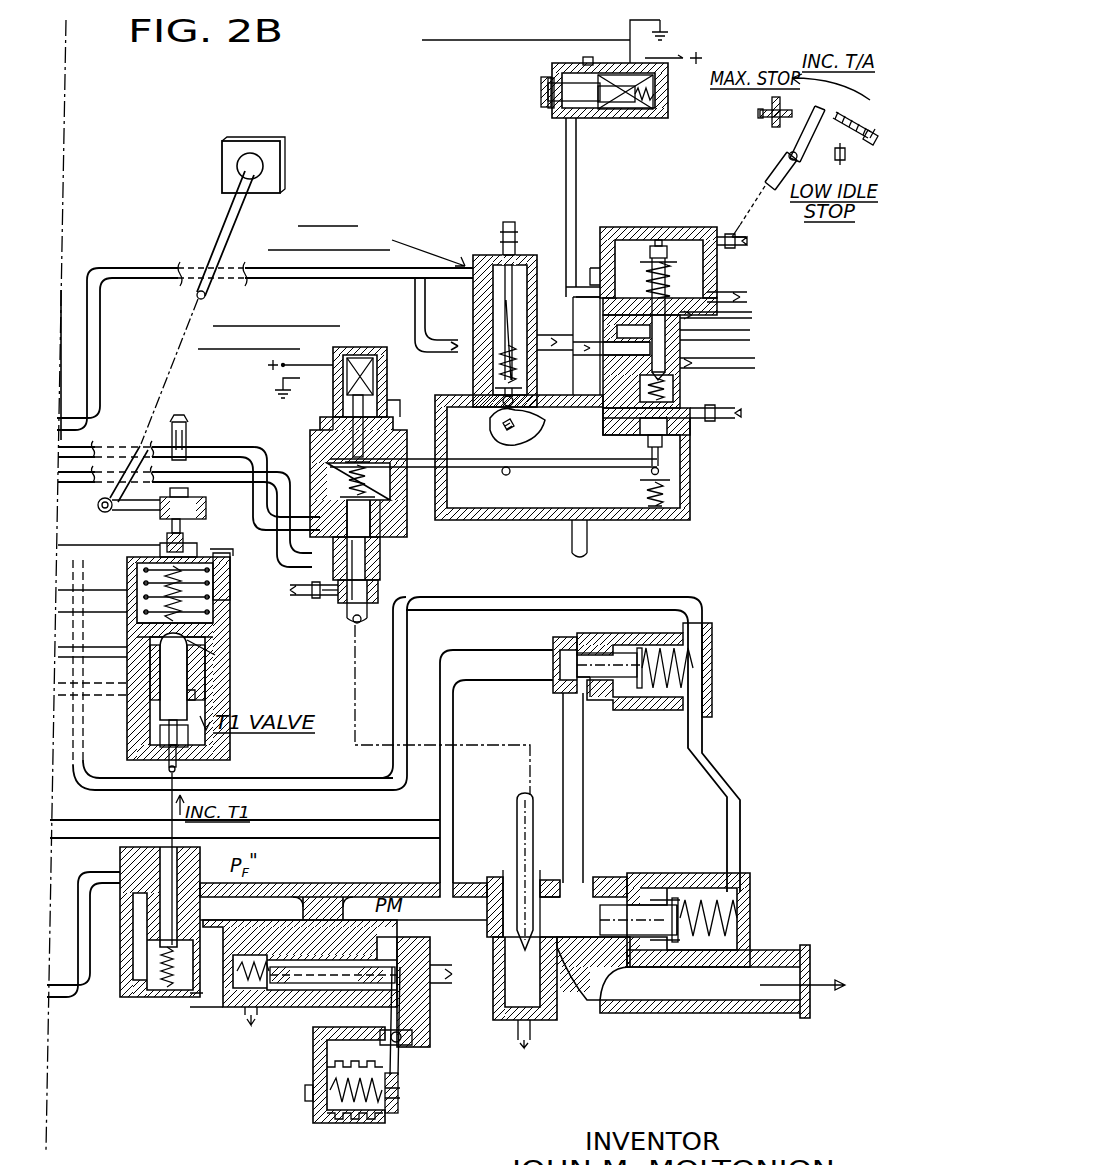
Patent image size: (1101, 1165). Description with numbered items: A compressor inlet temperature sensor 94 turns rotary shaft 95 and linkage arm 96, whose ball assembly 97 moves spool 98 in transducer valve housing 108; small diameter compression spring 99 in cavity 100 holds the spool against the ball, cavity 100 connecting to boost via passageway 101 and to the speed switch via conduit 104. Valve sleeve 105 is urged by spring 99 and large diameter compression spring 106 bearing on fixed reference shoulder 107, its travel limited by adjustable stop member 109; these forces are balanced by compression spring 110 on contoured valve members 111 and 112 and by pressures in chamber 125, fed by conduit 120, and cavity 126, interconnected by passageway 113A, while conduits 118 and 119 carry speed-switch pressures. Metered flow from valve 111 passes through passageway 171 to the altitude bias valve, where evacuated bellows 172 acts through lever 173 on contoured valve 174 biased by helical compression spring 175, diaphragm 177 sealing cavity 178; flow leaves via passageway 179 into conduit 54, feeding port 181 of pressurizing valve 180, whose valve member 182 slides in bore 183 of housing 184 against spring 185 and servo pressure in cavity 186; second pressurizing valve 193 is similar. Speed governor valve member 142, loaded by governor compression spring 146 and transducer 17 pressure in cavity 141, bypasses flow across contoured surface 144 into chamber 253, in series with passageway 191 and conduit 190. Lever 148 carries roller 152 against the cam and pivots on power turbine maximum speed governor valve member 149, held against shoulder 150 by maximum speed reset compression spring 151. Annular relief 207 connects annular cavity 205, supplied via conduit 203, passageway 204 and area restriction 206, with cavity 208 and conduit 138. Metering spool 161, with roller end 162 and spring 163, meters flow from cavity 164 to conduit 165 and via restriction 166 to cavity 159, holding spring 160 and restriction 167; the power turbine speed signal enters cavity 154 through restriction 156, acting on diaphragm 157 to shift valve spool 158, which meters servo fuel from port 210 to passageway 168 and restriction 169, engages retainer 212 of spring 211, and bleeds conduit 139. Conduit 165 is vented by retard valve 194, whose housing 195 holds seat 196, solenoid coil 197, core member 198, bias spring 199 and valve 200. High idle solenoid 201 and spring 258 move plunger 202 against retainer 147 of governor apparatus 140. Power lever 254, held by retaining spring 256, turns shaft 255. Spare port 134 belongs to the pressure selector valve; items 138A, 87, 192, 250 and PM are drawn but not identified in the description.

The T1 sensor 94 is at (470, 127).
The sensor rod 95 is at (124, 204).
The conduit 134 is at (100, 332).
The conduit 138 is at (80, 445).
The link bracket 138A is at (188, 426).
The conduit 120 is at (168, 461).
The pivot 96 is at (123, 490).
The lever link 98 is at (160, 512).
The valve 97 is at (204, 505).
The spool 107 is at (186, 540).
The stem 109 is at (200, 552).
The housing 108 is at (232, 570).
The T1 valve 99 is at (205, 655).
The spring 100 is at (212, 582).
The plate 101 is at (212, 598).
The wall 106 is at (220, 628).
The guide 105 is at (218, 648).
The port 125 is at (204, 668).
The stem 112 is at (196, 679).
The conduit 104 is at (108, 605).
The conduit 118 is at (765, 853).
The conduit 119 is at (75, 587).
The seat 113A is at (150, 742).
The stem 111 is at (166, 767).
The conduit 54 is at (69, 828).
The conduit 87 is at (103, 856).
The valve block 126 is at (140, 1000).
The spring 110 is at (165, 995).
The passage 171 is at (270, 892).
The valve 174 is at (238, 998).
The spring 175 is at (235, 988).
The spool 17 is at (300, 995).
The wall 178 is at (430, 1005).
The lever 177 is at (408, 1048).
The bellows 172 is at (345, 1124).
The rod 173 is at (402, 1093).
The passage 179 is at (462, 893).
The passage 191 is at (585, 917).
The chamber 253 is at (558, 997).
The orifice 144 is at (553, 1045).
The rod 142 is at (370, 624).
The duct 192 is at (748, 995).
The spring 193 is at (745, 905).
The plunger 200 is at (740, 920).
The plunger 258 is at (740, 892).
The PM passage PM is at (496, 766).
The passage 190 is at (583, 807).
The flange 181 is at (545, 678).
The body 184 is at (620, 710).
The port 183 is at (575, 696).
The plunger 182 is at (595, 650).
The spring 185 is at (695, 660).
The plate 186 is at (690, 693).
The retainer 180 is at (708, 626).
The link 152 is at (530, 470).
The pin 148 is at (487, 470).
The pin 149 is at (660, 470).
The stem 150 is at (665, 440).
The spring 151 is at (672, 492).
The port 169 is at (718, 418).
The start idle valve 164 is at (468, 262).
The stem 161 is at (487, 262).
The stem 250 is at (495, 238).
The spring cam 163 is at (493, 368).
The ball 162 is at (502, 414).
The conduit 139 is at (420, 300).
The rod 165 is at (564, 158).
The passage 166 is at (573, 315).
The passage 168 is at (573, 378).
The cap 154 is at (640, 240).
The valve 157 is at (615, 252).
The wall 159 is at (592, 270).
The spring 160 is at (680, 285).
The port 167 is at (750, 288).
The port 210 is at (755, 316).
The body 158 is at (752, 340).
The port 212 is at (757, 370).
The spring 211 is at (675, 392).
The solenoid housing 195 is at (673, 85).
The coil 197 is at (660, 108).
The armature 198 is at (620, 100).
The spring 199 is at (645, 105).
The bolt 194 is at (595, 55).
The flange 196 is at (550, 78).
The max stop screw 254 is at (800, 123).
The lever 256 is at (834, 107).
The link 255 is at (772, 173).
The link 156 is at (758, 195).
The high idle solenoid 201 is at (347, 350).
The housing 202 is at (393, 430).
The body 147 is at (310, 459).
The flange 140 is at (310, 434).
The spring 146 is at (372, 478).
The bore 141 is at (392, 525).
The sleeve 207 is at (382, 553).
The bore 208 is at (385, 570).
The flange 204 is at (380, 590).
The fitting 206 is at (313, 594).
The port 203 is at (345, 600).
The outlet 205 is at (358, 625).